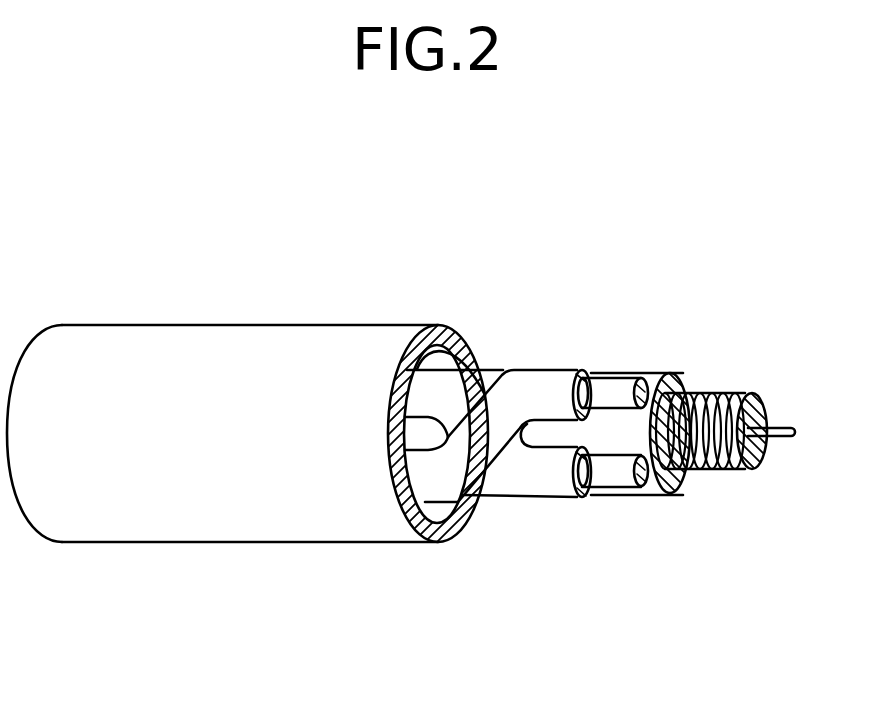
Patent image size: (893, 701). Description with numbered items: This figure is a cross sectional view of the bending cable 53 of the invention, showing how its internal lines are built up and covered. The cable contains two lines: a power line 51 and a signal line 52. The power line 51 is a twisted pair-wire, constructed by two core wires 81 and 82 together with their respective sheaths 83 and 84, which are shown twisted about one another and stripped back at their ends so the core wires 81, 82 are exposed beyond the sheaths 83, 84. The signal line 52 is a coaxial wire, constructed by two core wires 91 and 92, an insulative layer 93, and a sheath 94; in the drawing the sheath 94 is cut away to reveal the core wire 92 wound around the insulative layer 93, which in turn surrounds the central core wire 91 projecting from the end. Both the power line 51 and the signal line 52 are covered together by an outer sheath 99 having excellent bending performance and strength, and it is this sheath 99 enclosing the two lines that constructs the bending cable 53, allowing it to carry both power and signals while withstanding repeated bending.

The sheath 99 is at (284, 322).
The bending cable 53 is at (289, 546).
The power line 51 is at (520, 490).
The signal line 52 is at (689, 497).
The sheath 83 is at (532, 393).
The sheath 84 is at (546, 475).
The core wire 81 is at (611, 377).
The core wire 82 is at (612, 488).
The sheath 94 is at (683, 372).
The core wire 92 is at (724, 392).
The insulative layer 93 is at (767, 397).
The core wire 91 is at (783, 422).